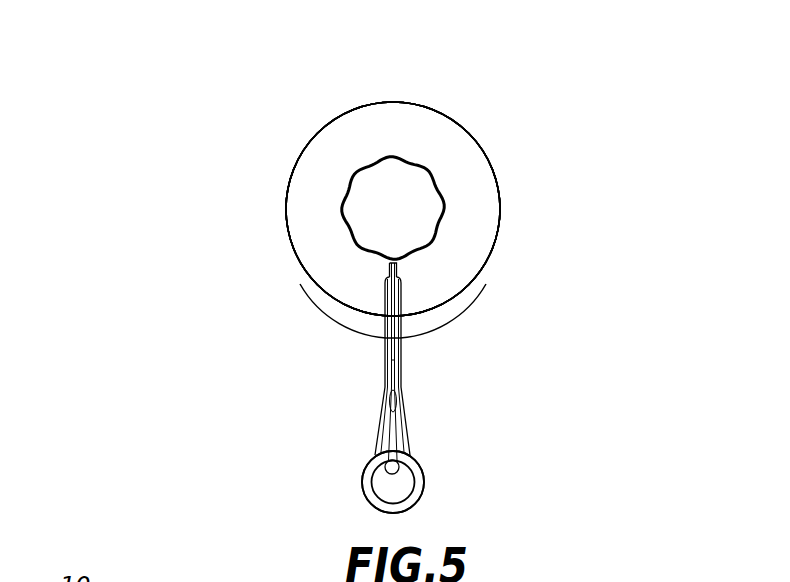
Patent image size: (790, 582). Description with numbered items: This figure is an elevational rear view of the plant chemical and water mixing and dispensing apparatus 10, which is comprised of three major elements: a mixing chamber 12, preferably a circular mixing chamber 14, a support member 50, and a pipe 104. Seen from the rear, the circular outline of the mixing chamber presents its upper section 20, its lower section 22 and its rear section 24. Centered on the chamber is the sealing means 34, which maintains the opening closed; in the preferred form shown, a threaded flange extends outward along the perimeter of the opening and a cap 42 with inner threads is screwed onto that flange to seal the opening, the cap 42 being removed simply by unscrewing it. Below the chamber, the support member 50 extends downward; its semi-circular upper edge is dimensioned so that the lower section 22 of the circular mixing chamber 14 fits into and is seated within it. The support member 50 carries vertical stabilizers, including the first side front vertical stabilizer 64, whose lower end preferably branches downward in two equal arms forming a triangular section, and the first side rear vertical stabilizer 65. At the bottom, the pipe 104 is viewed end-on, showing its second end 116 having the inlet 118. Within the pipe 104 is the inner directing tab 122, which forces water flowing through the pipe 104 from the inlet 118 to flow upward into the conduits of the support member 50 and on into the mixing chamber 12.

The plant chemical and water mixing and dispensing apparatus 10 is at (136, 96).
The mixing chamber 12 is at (562, 88).
The circular mixing chamber 14 is at (462, 160).
The upper section 20 is at (390, 100).
The lower section 22 is at (365, 314).
The rear section 24 is at (310, 200).
The sealing means 34 is at (423, 193).
The cap 42 is at (512, 197).
The support member 50 is at (604, 325).
The first side front vertical stabilizer 64 is at (401, 333).
The first side rear vertical stabilizer 65 is at (384, 376).
The pipe 104 is at (542, 501).
The second end 116 is at (364, 468).
The inlet 118 is at (387, 493).
The inner directing tab 122 is at (397, 462).